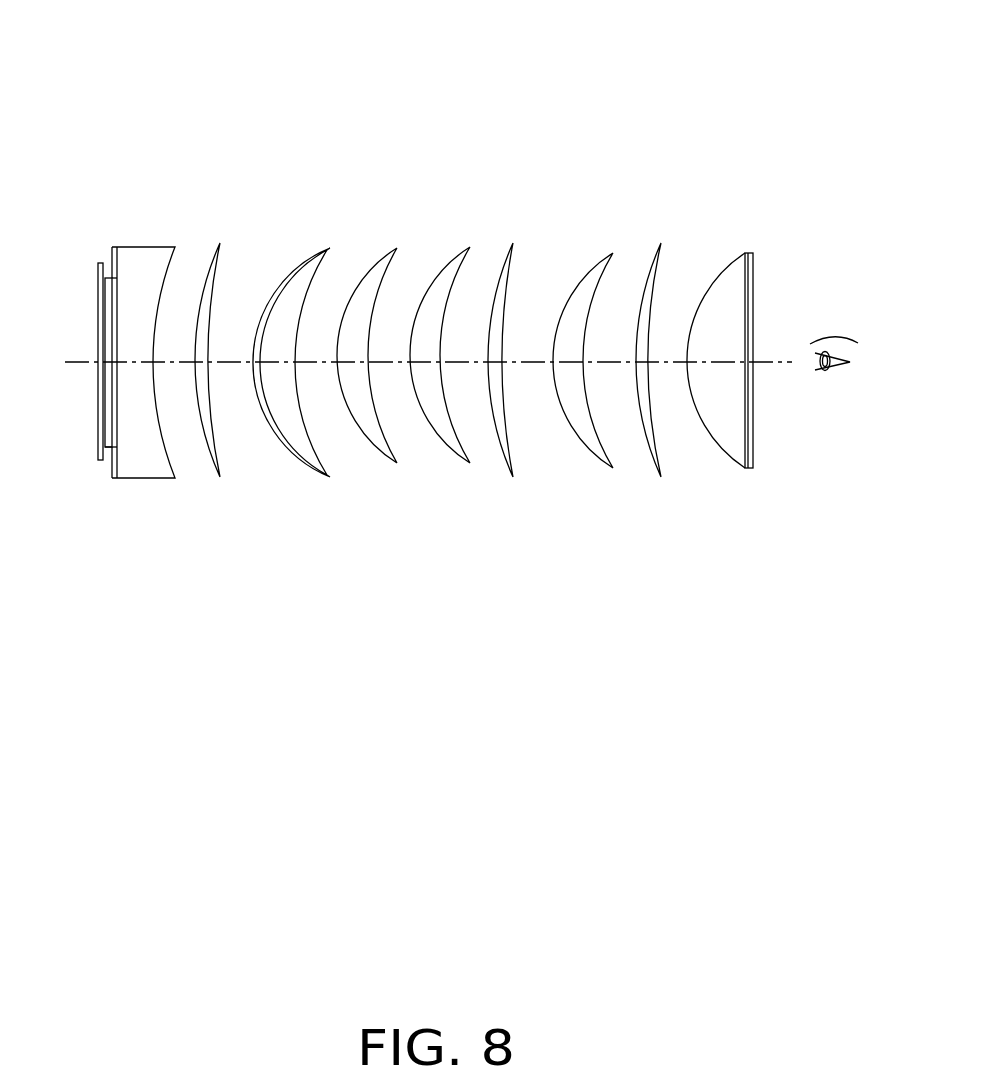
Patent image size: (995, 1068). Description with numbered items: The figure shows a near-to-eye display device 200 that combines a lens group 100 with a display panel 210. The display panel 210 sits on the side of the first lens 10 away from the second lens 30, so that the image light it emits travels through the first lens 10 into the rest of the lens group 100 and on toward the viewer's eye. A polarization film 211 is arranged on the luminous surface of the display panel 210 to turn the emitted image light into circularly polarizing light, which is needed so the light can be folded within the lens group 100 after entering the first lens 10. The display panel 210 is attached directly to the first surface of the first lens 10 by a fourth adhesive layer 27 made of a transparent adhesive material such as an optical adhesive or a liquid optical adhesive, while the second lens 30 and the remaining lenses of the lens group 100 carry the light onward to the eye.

The near-to-eye display device 200 is at (507, 52).
The lens group 100 is at (497, 198).
The first lens 10 is at (150, 257).
The fourth adhesive layer 27 is at (112, 282).
The second lens 30 is at (313, 255).
The display panel 210 is at (99, 455).
The polarization film 211 is at (108, 448).